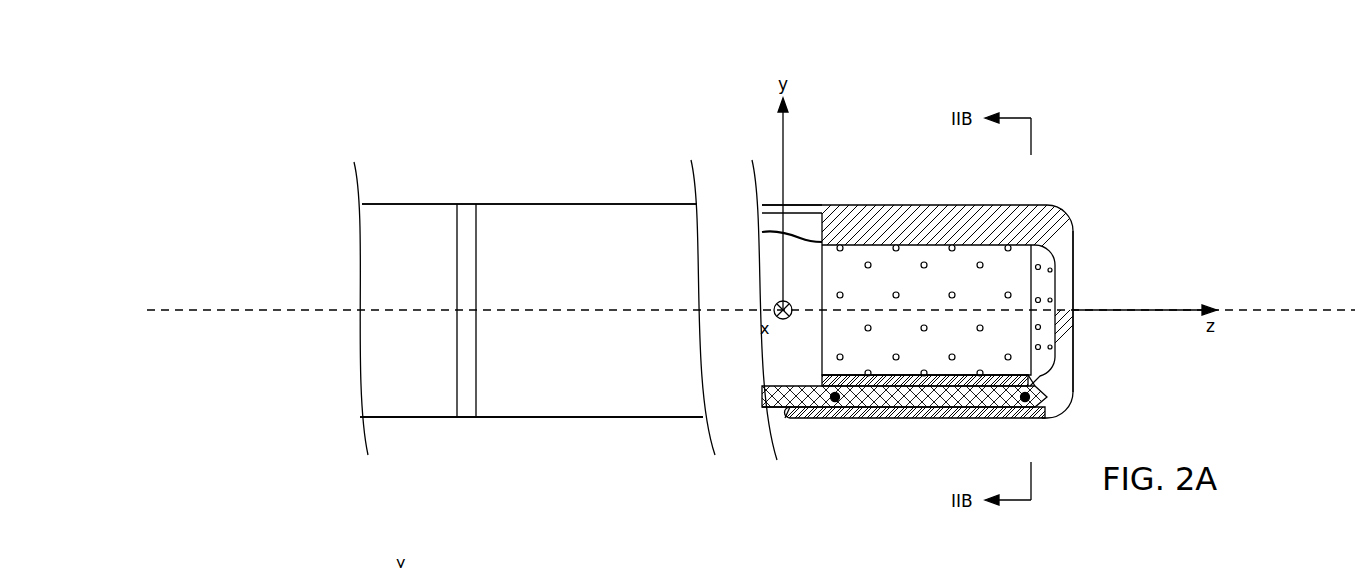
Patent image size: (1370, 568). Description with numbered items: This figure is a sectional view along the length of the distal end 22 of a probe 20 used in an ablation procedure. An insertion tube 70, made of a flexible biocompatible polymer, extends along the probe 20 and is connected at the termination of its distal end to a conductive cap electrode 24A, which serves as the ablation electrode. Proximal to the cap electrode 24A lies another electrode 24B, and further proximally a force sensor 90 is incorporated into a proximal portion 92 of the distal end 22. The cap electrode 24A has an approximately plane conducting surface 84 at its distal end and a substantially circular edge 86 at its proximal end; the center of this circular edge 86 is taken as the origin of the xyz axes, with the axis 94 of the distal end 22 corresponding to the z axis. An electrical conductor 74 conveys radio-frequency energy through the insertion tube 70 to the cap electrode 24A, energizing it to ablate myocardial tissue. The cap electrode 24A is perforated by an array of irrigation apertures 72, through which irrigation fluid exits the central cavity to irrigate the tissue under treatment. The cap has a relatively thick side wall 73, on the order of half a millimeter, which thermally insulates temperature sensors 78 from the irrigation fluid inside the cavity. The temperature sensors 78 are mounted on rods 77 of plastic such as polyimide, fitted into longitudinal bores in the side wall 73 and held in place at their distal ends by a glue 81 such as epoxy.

The probe 20 is at (410, 204).
The distal end 22 is at (565, 113).
The conductive cap electrode 24A is at (865, 205).
The electrode 24B is at (465, 204).
The insertion tube 70 is at (412, 417).
The irrigation apertures 72 is at (897, 357).
The side wall 73 is at (922, 225).
The electrical conductor 74 is at (808, 235).
The rods 77 is at (931, 418).
The temperature sensors 78 is at (850, 417).
The glue 81 is at (1058, 416).
The plane conducting surface 84 is at (1073, 258).
The circular edge 86 is at (786, 417).
The force sensor 90 is at (566, 448).
The proximal portion 92 is at (377, 204).
The axis 94 is at (177, 312).